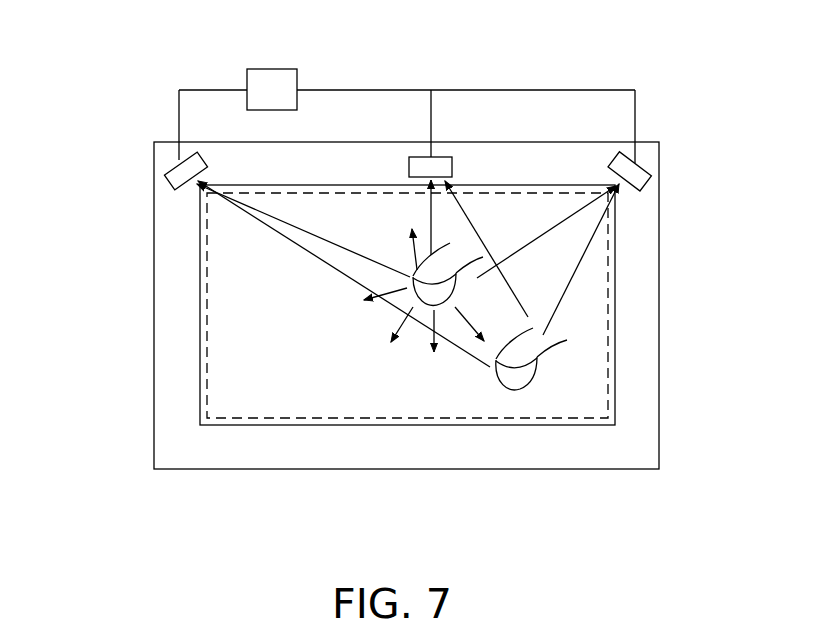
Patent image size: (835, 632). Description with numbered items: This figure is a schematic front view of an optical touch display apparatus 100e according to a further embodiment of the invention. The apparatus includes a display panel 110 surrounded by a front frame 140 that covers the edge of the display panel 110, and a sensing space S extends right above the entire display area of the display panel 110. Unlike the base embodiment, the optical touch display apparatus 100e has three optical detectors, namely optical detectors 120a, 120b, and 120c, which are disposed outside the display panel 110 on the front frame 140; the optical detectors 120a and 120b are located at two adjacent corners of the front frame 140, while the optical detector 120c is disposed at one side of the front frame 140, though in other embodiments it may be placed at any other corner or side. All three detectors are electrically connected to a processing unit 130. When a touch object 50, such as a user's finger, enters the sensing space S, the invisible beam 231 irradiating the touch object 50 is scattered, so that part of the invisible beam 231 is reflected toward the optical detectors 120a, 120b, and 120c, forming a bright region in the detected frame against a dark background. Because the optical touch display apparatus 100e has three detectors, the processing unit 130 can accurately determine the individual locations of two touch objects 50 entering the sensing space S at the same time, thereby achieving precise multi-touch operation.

The optical touch display apparatus 100e is at (745, 550).
The display panel 110 is at (260, 380).
The optical detector 120a is at (170, 180).
The optical detector 120b is at (641, 174).
The optical detector 120c is at (450, 166).
The processing unit 130 is at (276, 69).
The front frame 140 is at (643, 386).
The invisible beam 231 is at (277, 220).
The touch object 50 is at (457, 287).
The sensing space S is at (608, 232).